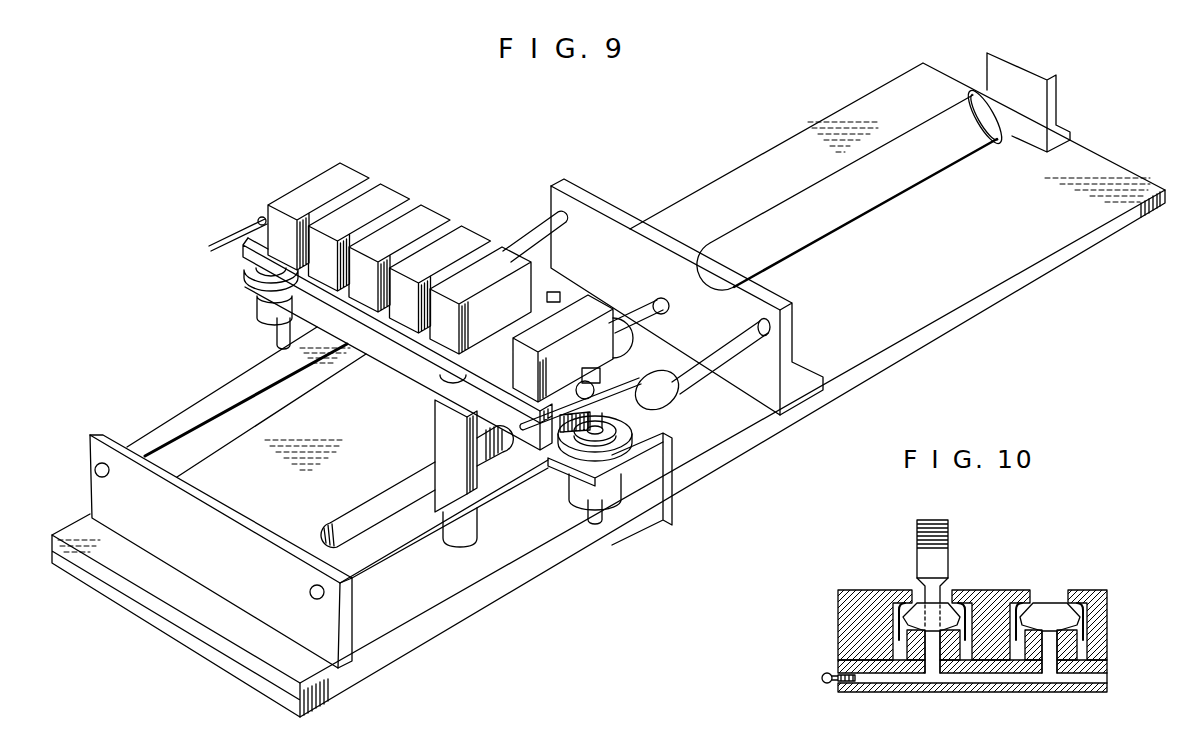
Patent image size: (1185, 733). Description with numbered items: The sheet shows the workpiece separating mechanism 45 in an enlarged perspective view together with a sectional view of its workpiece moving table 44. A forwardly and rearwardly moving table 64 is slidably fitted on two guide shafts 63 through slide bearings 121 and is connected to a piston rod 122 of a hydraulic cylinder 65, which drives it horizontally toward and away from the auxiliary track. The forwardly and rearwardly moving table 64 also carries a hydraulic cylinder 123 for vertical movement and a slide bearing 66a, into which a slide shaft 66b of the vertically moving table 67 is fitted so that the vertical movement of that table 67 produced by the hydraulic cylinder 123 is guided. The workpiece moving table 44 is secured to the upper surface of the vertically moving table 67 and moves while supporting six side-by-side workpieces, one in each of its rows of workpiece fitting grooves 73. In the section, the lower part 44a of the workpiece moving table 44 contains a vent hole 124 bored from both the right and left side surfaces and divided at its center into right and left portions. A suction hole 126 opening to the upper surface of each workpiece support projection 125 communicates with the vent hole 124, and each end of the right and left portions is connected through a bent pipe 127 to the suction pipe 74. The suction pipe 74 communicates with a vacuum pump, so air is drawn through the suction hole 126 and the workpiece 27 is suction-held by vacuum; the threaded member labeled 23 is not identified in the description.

In FIG. 9, the workpiece separating mechanism 45 is at (637, 184).
In FIG. 9, the workpiece fitting groove 73 is at (553, 296).
In FIG. 10, the workpiece fitting groove 73 is at (958, 603).
In FIG. 9, the workpiece moving table 44 is at (592, 312).
In FIG. 10, the workpiece moving table 44 is at (1107, 600).
In FIG. 9, the piston rod 122 is at (657, 318).
In FIG. 9, the bent pipe 127 is at (584, 380).
In FIG. 10, the bent pipe 127 is at (827, 684).
In FIG. 9, the vertically moving table 67 is at (614, 380).
In FIG. 9, the guide shaft 63 is at (687, 383).
In FIG. 9, the slide bearing 121 is at (672, 405).
In FIG. 9, the forwardly and rearwardly moving table 64 is at (634, 437).
In FIG. 9, the hydraulic cylinder 65 is at (833, 230).
In FIG. 9, the hydraulic cylinder 123 is at (442, 441).
In FIG. 9, the suction pipe 74 is at (548, 432).
In FIG. 9, the slide bearing 66a is at (612, 495).
In FIG. 9, the slide shaft 66b is at (597, 523).
In FIG. 10, the terminal pin 23 is at (947, 553).
In FIG. 10, the workpiece 27 is at (943, 604).
In FIG. 10, the suction hole 126 is at (1048, 627).
In FIG. 10, the workpiece support projection 125 is at (1072, 640).
In FIG. 10, the lower part 44a is at (1100, 668).
In FIG. 10, the vent hole 124 is at (1093, 680).